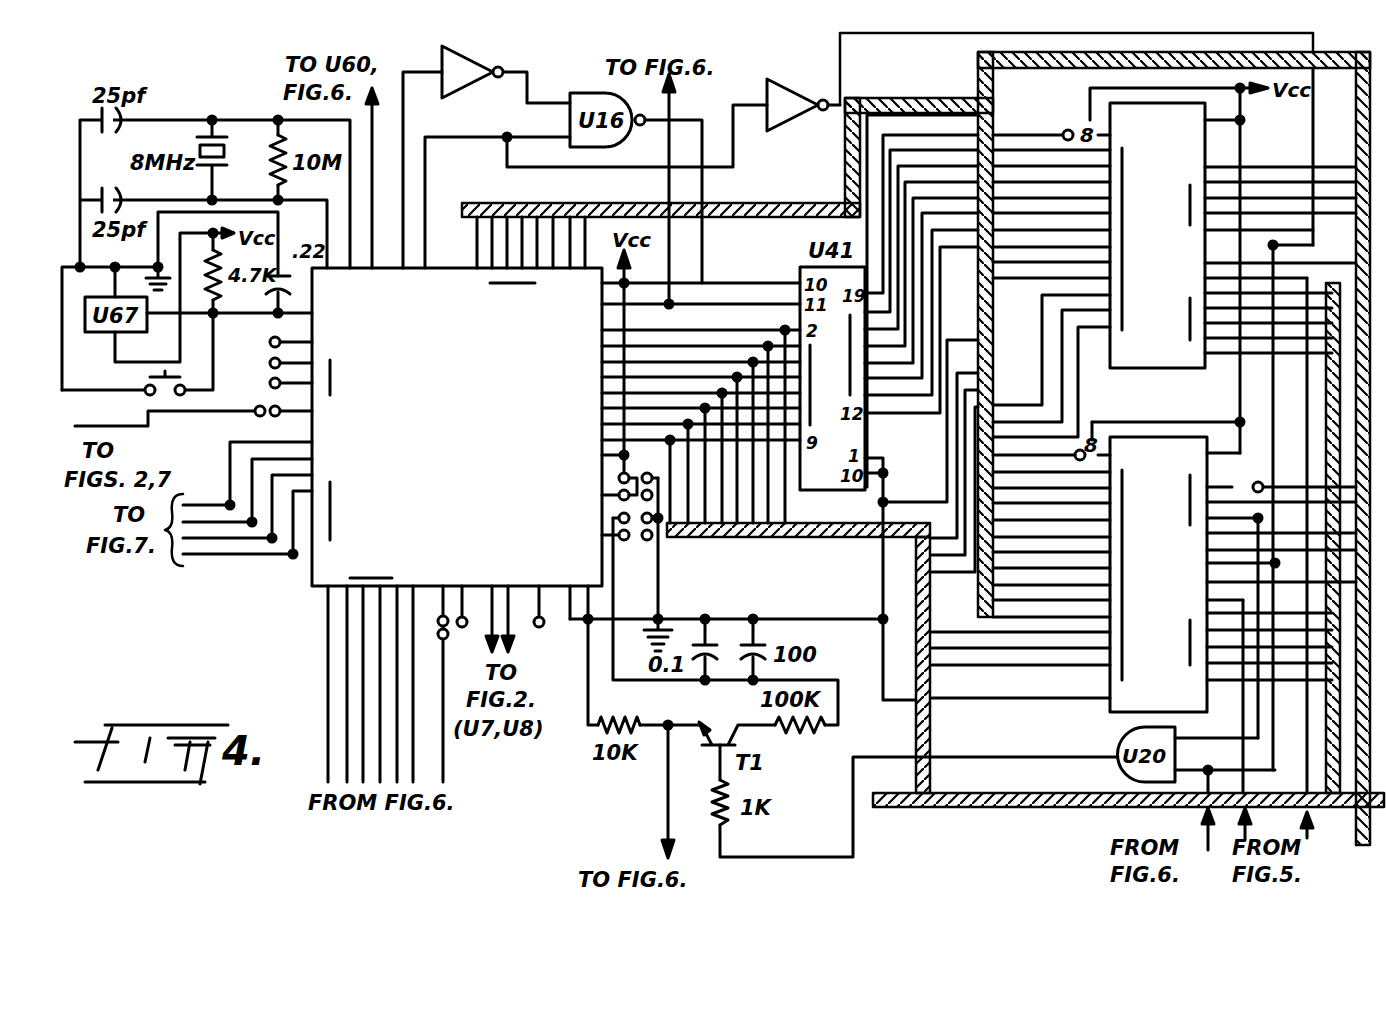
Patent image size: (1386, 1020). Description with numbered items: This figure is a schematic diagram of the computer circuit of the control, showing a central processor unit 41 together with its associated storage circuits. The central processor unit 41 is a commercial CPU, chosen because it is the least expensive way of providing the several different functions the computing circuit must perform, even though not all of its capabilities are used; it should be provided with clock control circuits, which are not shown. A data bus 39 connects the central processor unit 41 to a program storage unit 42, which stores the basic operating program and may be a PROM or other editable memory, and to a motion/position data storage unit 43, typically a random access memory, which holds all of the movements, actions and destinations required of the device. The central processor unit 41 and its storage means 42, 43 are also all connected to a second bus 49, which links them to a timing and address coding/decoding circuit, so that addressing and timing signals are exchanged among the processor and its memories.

The data bus 39 is at (832, 538).
The central processor unit 41 is at (312, 586).
The program storage unit 42 is at (1163, 370).
The motion/position data storage unit 43 is at (1106, 713).
The data bus 49 is at (788, 203).